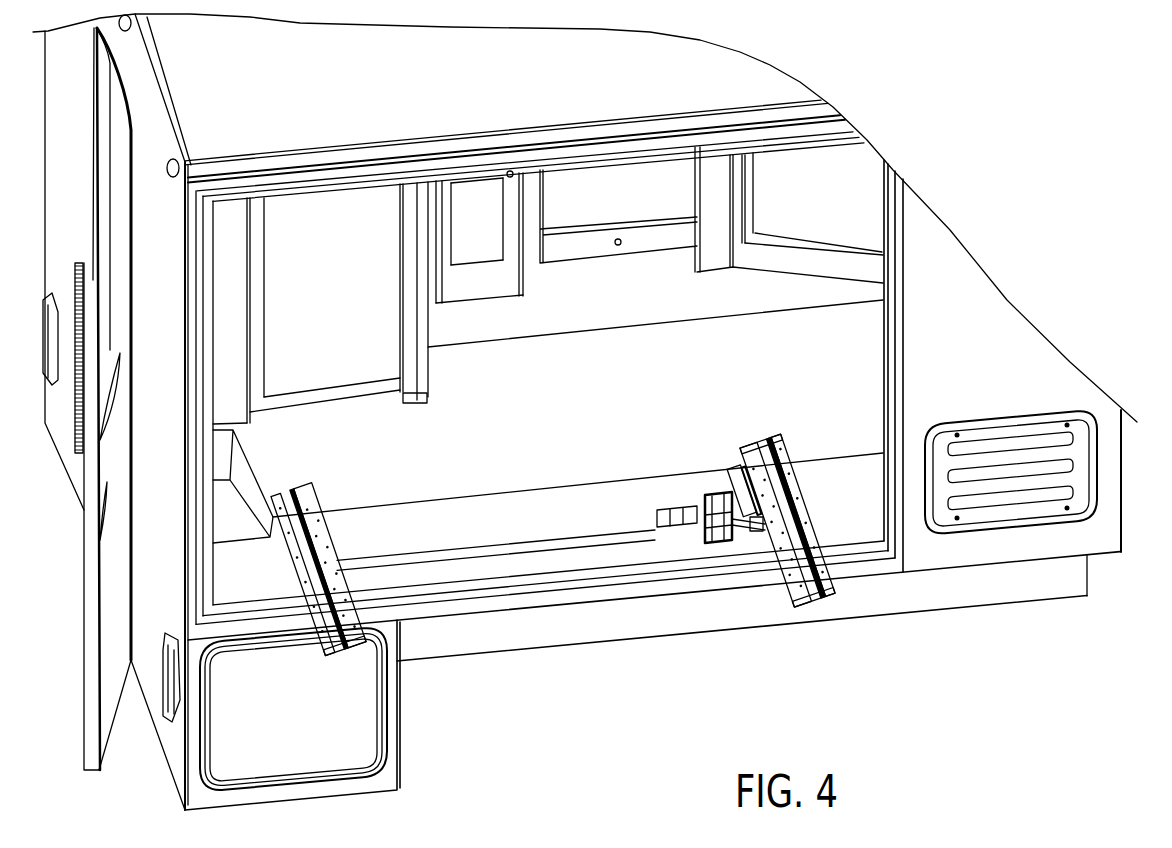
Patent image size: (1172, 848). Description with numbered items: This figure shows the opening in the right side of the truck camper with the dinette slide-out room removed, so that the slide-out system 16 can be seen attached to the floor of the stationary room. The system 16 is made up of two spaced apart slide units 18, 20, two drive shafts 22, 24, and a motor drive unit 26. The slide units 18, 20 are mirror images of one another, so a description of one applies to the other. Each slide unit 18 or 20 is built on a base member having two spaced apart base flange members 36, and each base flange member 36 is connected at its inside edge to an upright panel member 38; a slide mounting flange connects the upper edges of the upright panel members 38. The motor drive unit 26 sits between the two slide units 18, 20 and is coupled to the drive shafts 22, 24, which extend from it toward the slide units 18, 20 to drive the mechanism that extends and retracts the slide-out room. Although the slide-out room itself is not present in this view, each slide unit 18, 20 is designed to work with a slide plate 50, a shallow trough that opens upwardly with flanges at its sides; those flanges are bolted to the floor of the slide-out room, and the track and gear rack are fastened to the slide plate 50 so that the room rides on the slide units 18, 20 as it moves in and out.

The slide-out system 16 is at (789, 446).
The slide unit 18 is at (320, 496).
The slide unit 20 is at (735, 452).
The drive shaft 22 is at (472, 550).
The drive shaft 24 is at (747, 532).
The motor drive unit 26 is at (670, 510).
The base flange member 36 is at (733, 487).
The upright panel member 38 is at (745, 465).
The slide plate 50 is at (362, 632).